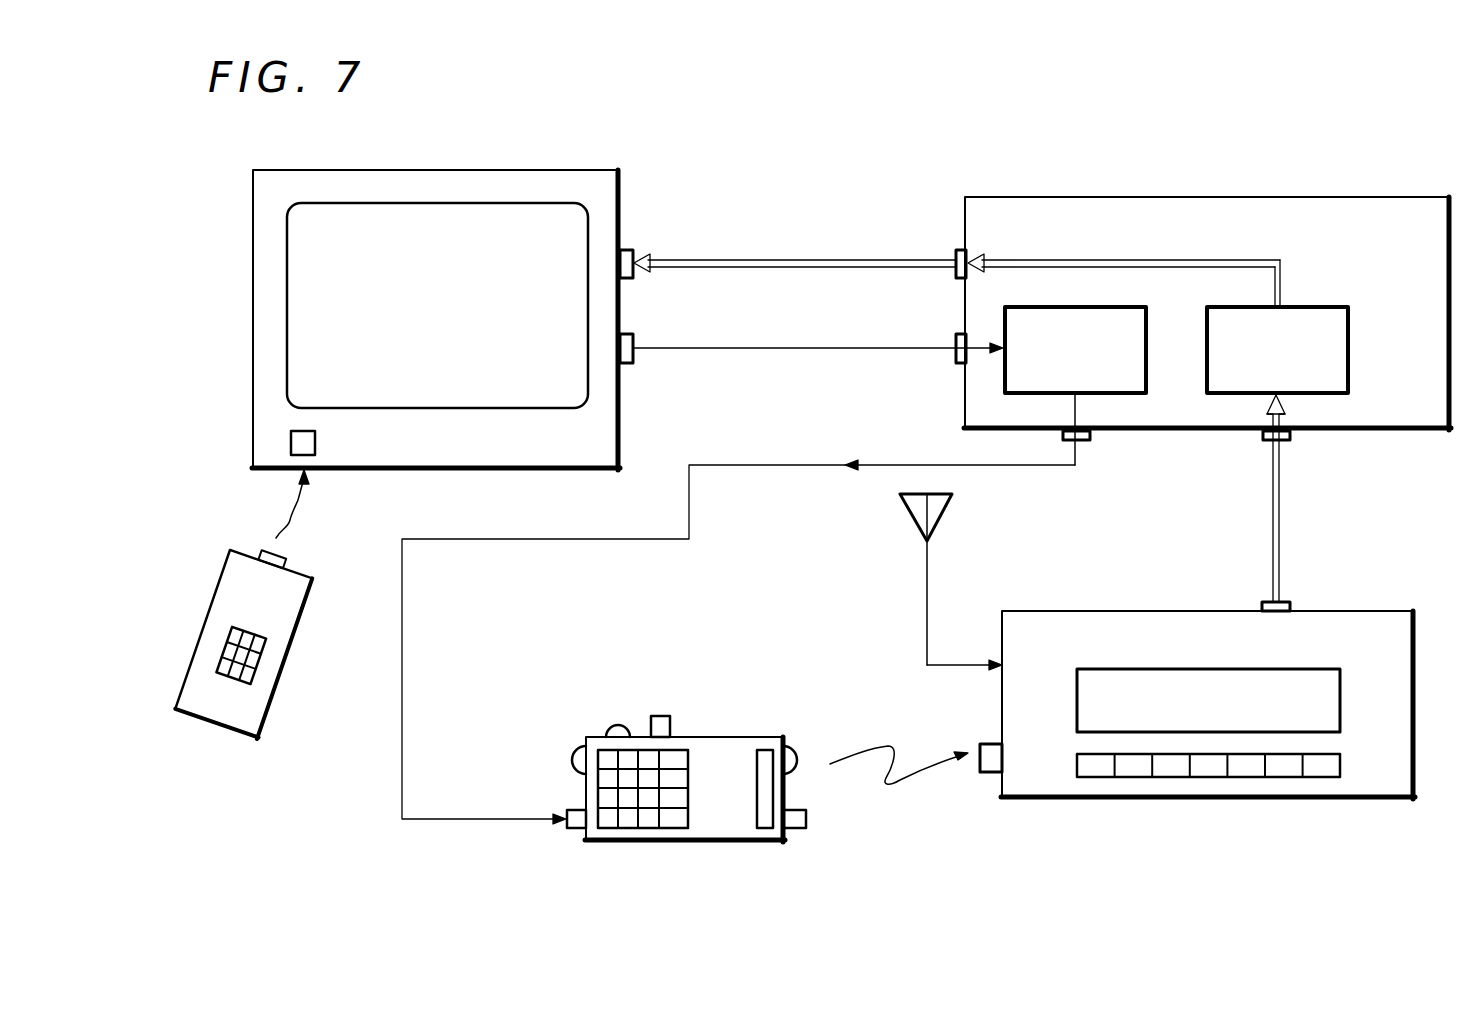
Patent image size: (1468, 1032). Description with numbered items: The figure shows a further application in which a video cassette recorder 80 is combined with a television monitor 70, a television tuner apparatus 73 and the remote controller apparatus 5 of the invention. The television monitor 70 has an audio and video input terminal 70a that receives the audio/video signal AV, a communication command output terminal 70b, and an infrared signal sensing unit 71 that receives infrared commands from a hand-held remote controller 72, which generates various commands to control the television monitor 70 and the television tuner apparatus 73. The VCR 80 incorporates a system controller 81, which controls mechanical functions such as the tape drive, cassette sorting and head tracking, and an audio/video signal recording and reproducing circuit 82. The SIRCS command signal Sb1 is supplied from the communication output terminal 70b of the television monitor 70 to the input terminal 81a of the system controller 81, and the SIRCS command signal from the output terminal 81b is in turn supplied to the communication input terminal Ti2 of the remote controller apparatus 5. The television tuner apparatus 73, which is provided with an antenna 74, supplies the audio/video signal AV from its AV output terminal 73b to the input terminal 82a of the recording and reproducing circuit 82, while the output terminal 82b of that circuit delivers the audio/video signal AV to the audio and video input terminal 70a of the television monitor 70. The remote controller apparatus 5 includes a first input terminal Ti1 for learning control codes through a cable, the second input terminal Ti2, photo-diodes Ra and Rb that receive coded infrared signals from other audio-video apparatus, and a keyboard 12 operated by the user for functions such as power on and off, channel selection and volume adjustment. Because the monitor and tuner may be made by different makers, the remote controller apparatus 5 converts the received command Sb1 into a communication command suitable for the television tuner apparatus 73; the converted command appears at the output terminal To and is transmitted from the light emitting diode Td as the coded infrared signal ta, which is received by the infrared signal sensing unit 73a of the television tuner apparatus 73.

The television monitor 70 is at (508, 166).
The audio and video input terminal 70a is at (630, 250).
The communication command output terminal 70b is at (630, 344).
The infrared signal sensing unit 71 is at (291, 440).
The remote controller 72 is at (224, 603).
The video cassette recorder 80 is at (1200, 191).
The system controller 81 is at (1116, 306).
The audio/video signal recording and reproducing circuit 82 is at (1306, 306).
The input terminal of the system controller 81a is at (958, 338).
The output terminal of the system controller 81b is at (1090, 442).
The input terminal of the recording and reproducing circuit 82a is at (1290, 442).
The output terminal of the recording and reproducing circuit 82b is at (956, 252).
The television tuner apparatus 73 is at (1346, 608).
The infrared signal sensing unit 73a is at (992, 772).
The audio and video output terminal 73b is at (1262, 605).
The antenna 74 is at (927, 590).
The remote controller apparatus 5 is at (717, 727).
The keyboard 12 is at (698, 806).
The photo-diode Ra is at (618, 724).
The photo-diode Rb is at (570, 748).
The light emitting diode Td is at (800, 752).
The first input terminal Ti1 is at (666, 724).
The second input terminal Ti2 is at (576, 828).
The output terminal To is at (798, 828).
The code signal Sb1 is at (402, 758).
The coded infrared signal ta is at (899, 773).
The audio/video signal AV is at (776, 260).